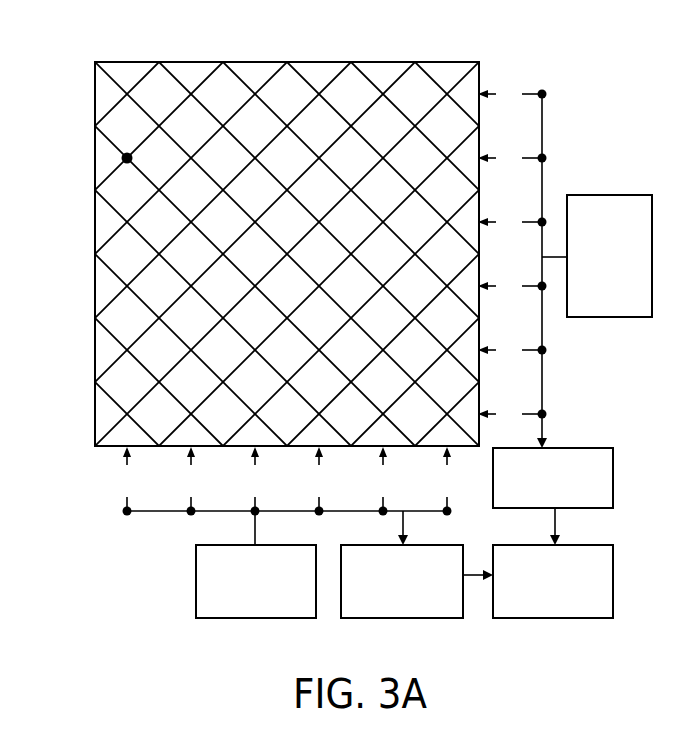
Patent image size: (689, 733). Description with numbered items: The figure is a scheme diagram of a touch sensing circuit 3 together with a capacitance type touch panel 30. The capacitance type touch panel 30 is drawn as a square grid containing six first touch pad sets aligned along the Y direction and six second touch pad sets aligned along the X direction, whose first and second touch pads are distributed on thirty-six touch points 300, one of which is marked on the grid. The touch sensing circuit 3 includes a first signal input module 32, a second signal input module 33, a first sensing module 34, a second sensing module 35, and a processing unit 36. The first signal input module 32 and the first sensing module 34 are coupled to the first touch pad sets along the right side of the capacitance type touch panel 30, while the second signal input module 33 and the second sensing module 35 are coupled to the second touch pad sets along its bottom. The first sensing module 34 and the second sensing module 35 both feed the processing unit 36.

The touch sensing circuit 3 is at (583, 57).
The capacitance type touch panel 30 is at (397, 62).
The touch points 300 is at (124, 160).
The first signal input module 32 is at (602, 195).
The second signal input module 33 is at (200, 618).
The first sensing module 34 is at (580, 448).
The second sensing module 35 is at (344, 618).
The processing unit 36 is at (497, 618).